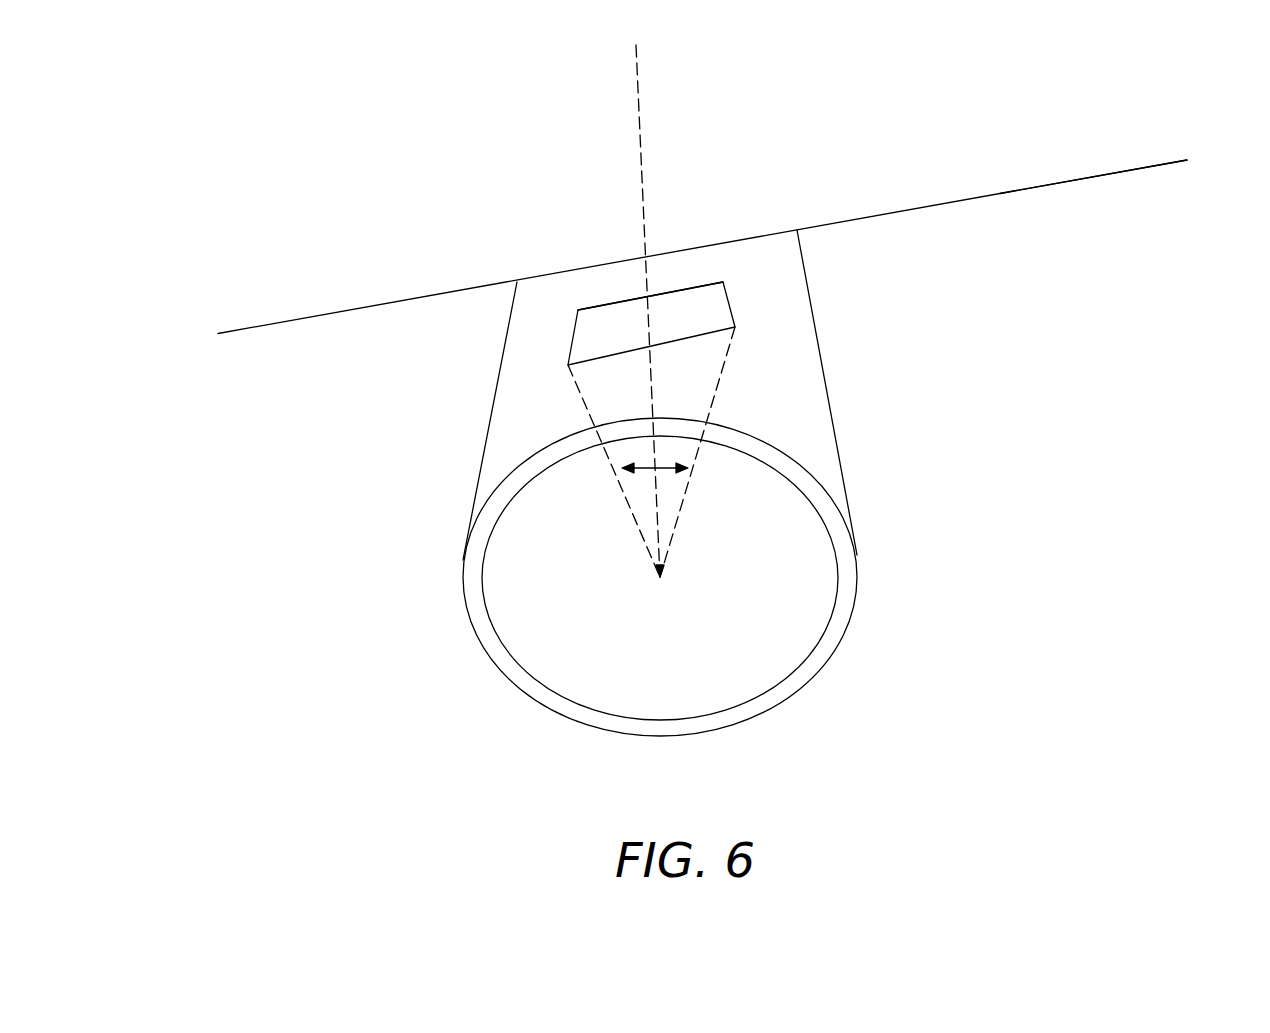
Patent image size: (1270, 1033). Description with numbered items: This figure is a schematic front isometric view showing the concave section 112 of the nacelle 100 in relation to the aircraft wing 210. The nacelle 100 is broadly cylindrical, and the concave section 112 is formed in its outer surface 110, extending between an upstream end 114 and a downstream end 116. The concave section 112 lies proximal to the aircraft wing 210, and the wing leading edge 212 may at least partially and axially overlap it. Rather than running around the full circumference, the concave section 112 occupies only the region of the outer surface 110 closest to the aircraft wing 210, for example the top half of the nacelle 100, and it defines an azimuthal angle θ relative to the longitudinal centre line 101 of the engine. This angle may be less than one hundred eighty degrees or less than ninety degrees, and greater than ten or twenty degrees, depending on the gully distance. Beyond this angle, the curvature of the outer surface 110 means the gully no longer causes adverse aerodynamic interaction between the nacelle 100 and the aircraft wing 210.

The nacelle 100 is at (433, 543).
The longitudinal centre line 101 is at (640, 135).
The outer surface 110 is at (517, 393).
The concave section 112 is at (703, 313).
The upstream end 114 is at (680, 339).
The downstream end 116 is at (685, 289).
The aircraft wing 210 is at (375, 267).
The wing leading edge 212 is at (1050, 185).